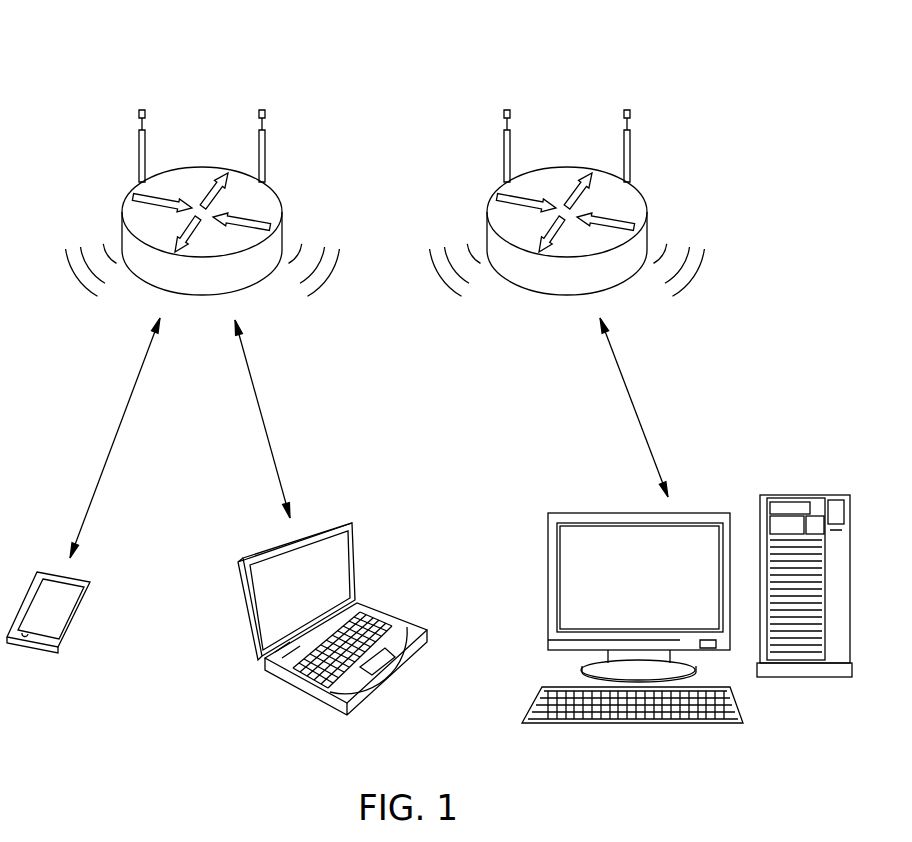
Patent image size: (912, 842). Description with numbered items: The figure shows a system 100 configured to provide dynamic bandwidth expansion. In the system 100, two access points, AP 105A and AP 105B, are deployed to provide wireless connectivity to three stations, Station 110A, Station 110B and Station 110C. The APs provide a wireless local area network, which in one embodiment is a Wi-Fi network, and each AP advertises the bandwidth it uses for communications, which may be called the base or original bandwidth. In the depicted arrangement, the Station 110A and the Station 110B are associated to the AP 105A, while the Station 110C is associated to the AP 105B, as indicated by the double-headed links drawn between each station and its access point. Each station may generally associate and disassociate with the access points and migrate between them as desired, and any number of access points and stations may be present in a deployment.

The system 100 is at (140, 62).
The AP 105A is at (280, 202).
The AP 105B is at (644, 202).
The Station 110A is at (90, 582).
The Station 110B is at (362, 560).
The Station 110C is at (815, 495).